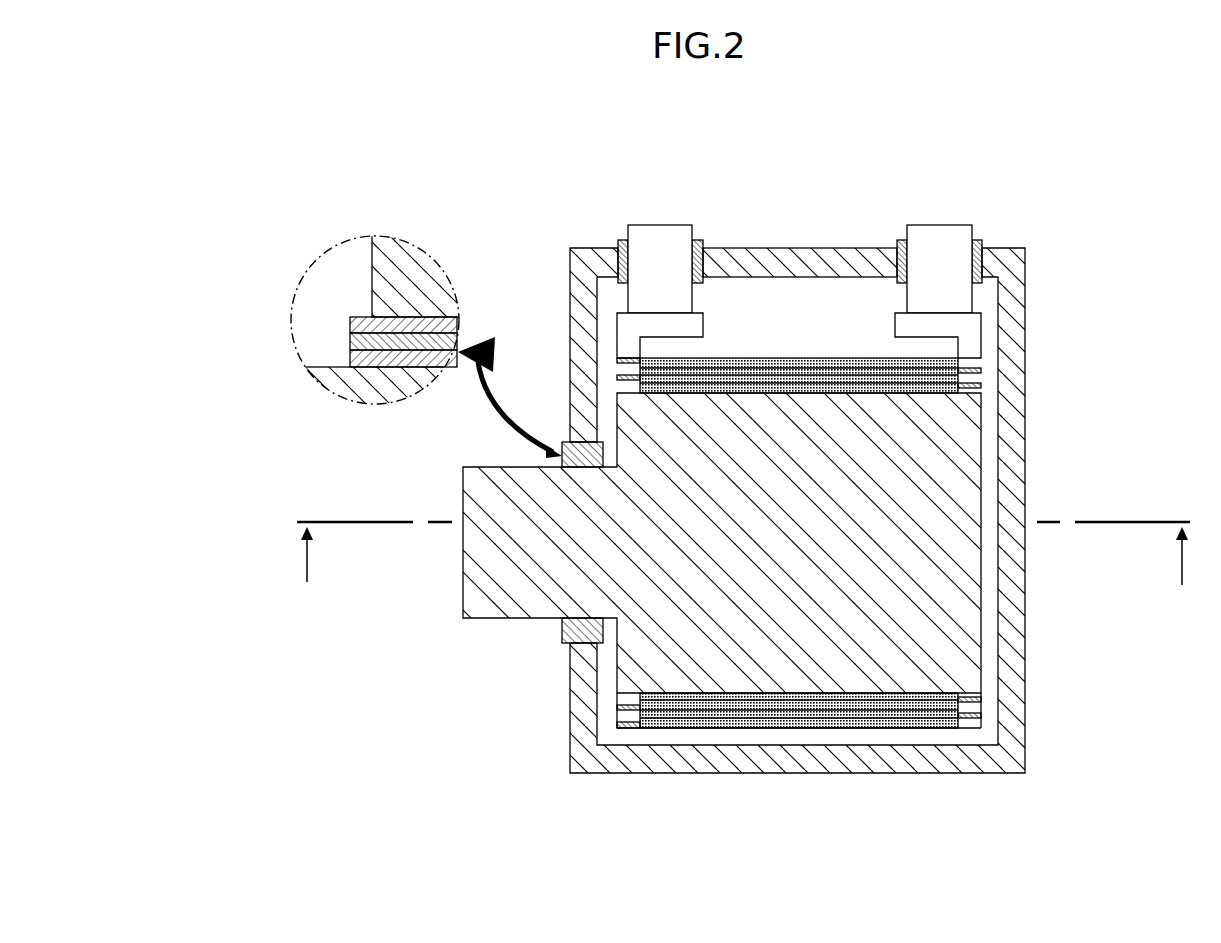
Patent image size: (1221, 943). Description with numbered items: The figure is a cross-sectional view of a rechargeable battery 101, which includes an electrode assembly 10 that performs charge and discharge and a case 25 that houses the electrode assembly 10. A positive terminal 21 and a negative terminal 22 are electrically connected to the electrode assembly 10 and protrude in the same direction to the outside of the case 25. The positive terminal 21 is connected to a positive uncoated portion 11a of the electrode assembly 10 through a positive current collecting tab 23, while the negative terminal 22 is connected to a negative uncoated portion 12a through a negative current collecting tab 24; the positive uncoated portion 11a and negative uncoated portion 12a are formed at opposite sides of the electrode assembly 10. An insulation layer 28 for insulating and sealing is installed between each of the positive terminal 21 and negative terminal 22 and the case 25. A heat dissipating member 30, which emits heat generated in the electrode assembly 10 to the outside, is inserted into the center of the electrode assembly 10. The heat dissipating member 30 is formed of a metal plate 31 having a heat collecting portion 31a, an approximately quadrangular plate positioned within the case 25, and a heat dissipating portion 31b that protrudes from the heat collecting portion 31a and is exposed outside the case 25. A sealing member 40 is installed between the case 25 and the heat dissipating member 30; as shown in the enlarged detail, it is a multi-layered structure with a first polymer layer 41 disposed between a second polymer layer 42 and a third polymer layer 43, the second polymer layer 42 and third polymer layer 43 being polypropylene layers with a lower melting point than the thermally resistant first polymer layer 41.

The rechargeable battery 101 is at (786, 113).
The electrode assembly 10 is at (818, 287).
The positive uncoated portion 11a is at (632, 362).
The negative uncoated portion 12a is at (968, 368).
The positive terminal 21 is at (659, 236).
The negative terminal 22 is at (937, 236).
The positive current collecting tab 23 is at (663, 322).
The negative current collecting tab 24 is at (955, 322).
The case 25 is at (1015, 396).
The insulation layer 28 is at (699, 247).
The heat dissipating member 30 is at (768, 695).
The metal plate 31 is at (649, 535).
The heat collecting portion 31a is at (642, 653).
The heat dissipating portion 31b is at (482, 597).
The sealing member 40 is at (558, 456).
The first polymer layer 41 is at (350, 342).
The second polymer layer 42 is at (350, 359).
The third polymer layer 43 is at (350, 322).